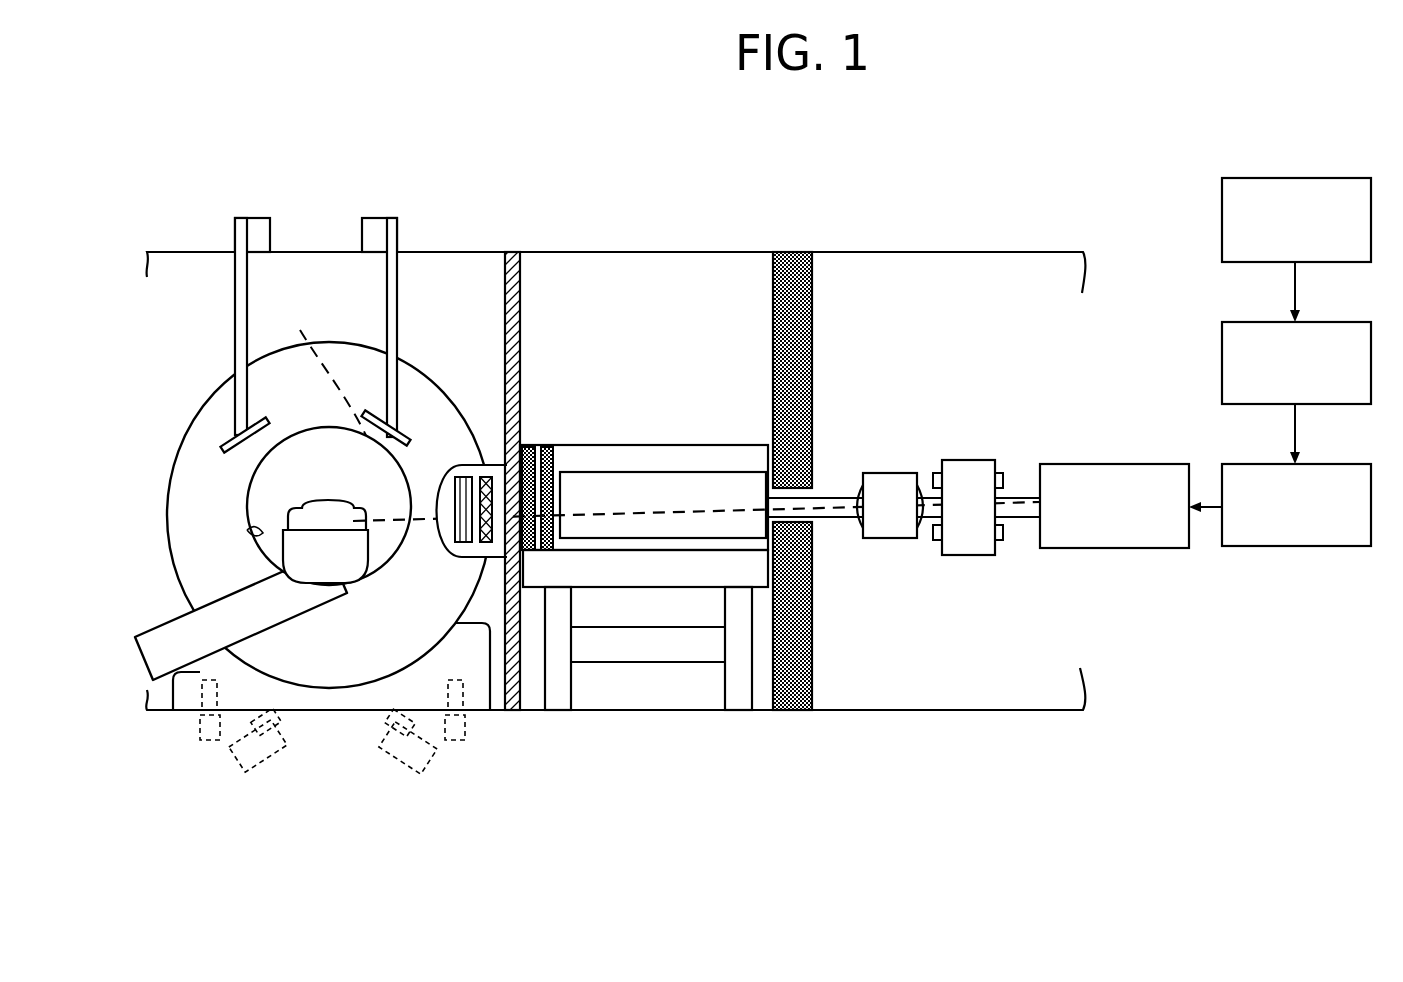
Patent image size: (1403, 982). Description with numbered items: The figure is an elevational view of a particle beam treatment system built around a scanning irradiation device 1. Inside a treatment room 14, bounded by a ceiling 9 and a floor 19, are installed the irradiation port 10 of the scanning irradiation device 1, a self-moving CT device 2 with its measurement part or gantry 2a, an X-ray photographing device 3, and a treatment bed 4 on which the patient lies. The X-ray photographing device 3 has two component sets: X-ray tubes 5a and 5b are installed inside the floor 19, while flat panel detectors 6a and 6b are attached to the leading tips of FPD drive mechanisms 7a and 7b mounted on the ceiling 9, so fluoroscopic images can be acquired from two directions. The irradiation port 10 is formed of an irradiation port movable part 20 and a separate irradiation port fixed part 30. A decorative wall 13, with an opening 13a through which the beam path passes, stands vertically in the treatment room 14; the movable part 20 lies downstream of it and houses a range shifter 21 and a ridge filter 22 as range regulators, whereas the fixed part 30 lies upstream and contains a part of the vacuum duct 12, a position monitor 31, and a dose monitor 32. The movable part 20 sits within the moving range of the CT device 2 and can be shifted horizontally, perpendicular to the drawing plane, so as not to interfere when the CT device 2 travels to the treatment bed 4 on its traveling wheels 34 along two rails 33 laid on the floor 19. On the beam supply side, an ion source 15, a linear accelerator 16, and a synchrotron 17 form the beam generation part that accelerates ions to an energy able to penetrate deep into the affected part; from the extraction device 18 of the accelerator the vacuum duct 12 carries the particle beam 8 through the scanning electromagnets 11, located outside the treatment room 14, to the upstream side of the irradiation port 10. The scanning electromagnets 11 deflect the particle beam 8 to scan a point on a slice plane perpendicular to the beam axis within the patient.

The scanning irradiation device 1 is at (660, 288).
The CT device 2 is at (176, 440).
The measurement part (gantry) 2a is at (262, 534).
The X-ray photographing device 3 is at (302, 347).
The treatment bed 4 is at (293, 556).
The X-ray tube 5a is at (257, 767).
The X-ray tube 5b is at (397, 767).
The flat panel detector 6a is at (405, 440).
The flat panel detector 6b is at (240, 448).
The flat panel detector drive mechanism 7a is at (387, 295).
The flat panel detector drive mechanism 7b is at (235, 295).
The particle beam 8 is at (339, 410).
The ceiling 9 is at (955, 253).
The irradiation port 10 is at (625, 585).
The scanning electromagnets 11 is at (1003, 452).
The vacuum duct 12 is at (830, 497).
The decorative wall 13 is at (523, 455).
The wall opening 13a is at (500, 465).
The treatment room 14 is at (702, 270).
The ion source 15 is at (1332, 177).
The linear accelerator 16 is at (1332, 321).
The synchrotron 17 is at (1332, 463).
The extraction device 18 is at (1150, 463).
The floor 19 is at (922, 708).
The irradiation port movable part 20 is at (484, 552).
The range shifter 21 is at (455, 477).
The ridge filter 22 is at (485, 477).
The irradiation port fixed part 30 is at (675, 550).
The position monitor 31 is at (527, 445).
The dose monitor 32 is at (548, 447).
The rails 33 is at (200, 740).
The traveling wheels 34 is at (203, 689).